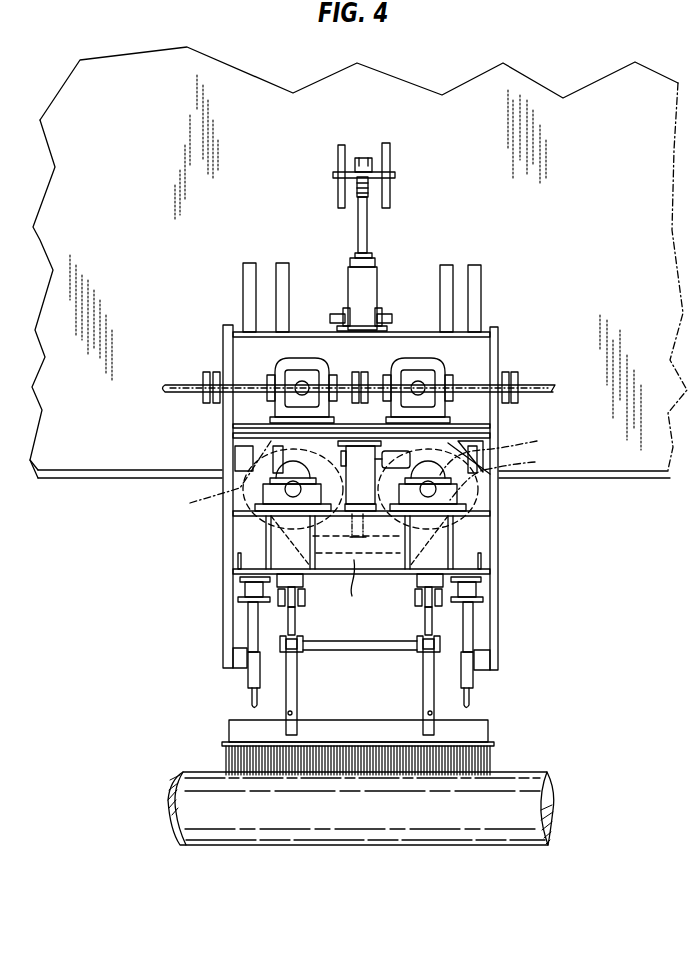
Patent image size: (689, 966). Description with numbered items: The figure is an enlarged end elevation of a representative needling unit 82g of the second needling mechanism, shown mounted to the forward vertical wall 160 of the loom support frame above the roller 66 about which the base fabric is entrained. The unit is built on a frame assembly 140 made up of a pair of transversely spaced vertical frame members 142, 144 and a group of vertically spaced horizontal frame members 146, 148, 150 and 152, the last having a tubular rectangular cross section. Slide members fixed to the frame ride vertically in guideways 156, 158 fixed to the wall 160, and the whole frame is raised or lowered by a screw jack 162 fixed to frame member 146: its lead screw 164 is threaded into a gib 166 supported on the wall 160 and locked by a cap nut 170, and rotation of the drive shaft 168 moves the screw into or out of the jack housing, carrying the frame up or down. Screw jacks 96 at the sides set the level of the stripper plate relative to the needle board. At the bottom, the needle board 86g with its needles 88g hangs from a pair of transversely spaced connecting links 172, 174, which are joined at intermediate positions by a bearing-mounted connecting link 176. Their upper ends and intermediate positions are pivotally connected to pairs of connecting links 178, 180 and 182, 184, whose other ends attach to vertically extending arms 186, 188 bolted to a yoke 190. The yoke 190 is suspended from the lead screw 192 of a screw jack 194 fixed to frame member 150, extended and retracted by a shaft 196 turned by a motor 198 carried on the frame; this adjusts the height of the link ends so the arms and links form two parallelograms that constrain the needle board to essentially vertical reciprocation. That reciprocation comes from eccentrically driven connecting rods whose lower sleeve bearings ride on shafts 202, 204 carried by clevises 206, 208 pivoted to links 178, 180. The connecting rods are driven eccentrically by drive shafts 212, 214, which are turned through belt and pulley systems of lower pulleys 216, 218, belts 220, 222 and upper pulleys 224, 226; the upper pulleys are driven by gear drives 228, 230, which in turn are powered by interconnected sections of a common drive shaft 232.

The roller 66 is at (535, 810).
The needling unit 82g is at (198, 447).
The needle board 86g is at (485, 728).
The needles 88g is at (482, 760).
The screw jacks 96 is at (243, 597).
The frame assembly 140 is at (376, 476).
The vertical frame member 142 is at (228, 640).
The vertical frame member 144 is at (497, 628).
The horizontal frame member 146 is at (316, 332).
The horizontal frame member 148 is at (378, 427).
The horizontal frame member 150 is at (499, 436).
The horizontal frame member 152 is at (357, 587).
The guideway 156 is at (281, 263).
The guideway 158 is at (447, 265).
The forward vertical wall 160 is at (93, 455).
The screw jack 162 is at (370, 278).
The lead screw 164 is at (366, 230).
The gib 166 is at (392, 176).
The drive shaft 168 is at (388, 314).
The cap nuts 170 is at (373, 165).
The connecting link 172 is at (290, 695).
The connecting link 174 is at (427, 697).
The connecting link 176 is at (353, 645).
The connecting link 178 is at (307, 610).
The connecting link 180 is at (408, 611).
The connecting link 182 is at (297, 653).
The connecting link 184 is at (423, 657).
The vertically extending arm 186 is at (292, 588).
The vertically extending arm 188 is at (422, 588).
The yoke 190 is at (398, 545).
The lead screw 192 is at (362, 523).
The screw jack 194 is at (372, 497).
The shaft 196 is at (341, 458).
The motor 198 is at (380, 460).
The shaft 202 is at (269, 547).
The shaft 204 is at (420, 560).
The clevis 206 is at (302, 598).
The clevis 208 is at (418, 594).
The drive shaft 212 is at (290, 491).
The drive shaft 214 is at (430, 491).
The lower pulley 216 is at (272, 452).
The lower pulley 218 is at (506, 474).
The belt 220 is at (217, 478).
The belt 222 is at (501, 451).
The upper pulley 224 is at (300, 405).
The upper pulley 226 is at (443, 409).
The gear drive 228 is at (287, 379).
The gear drive 230 is at (431, 381).
The drive shaft 232 is at (262, 386).